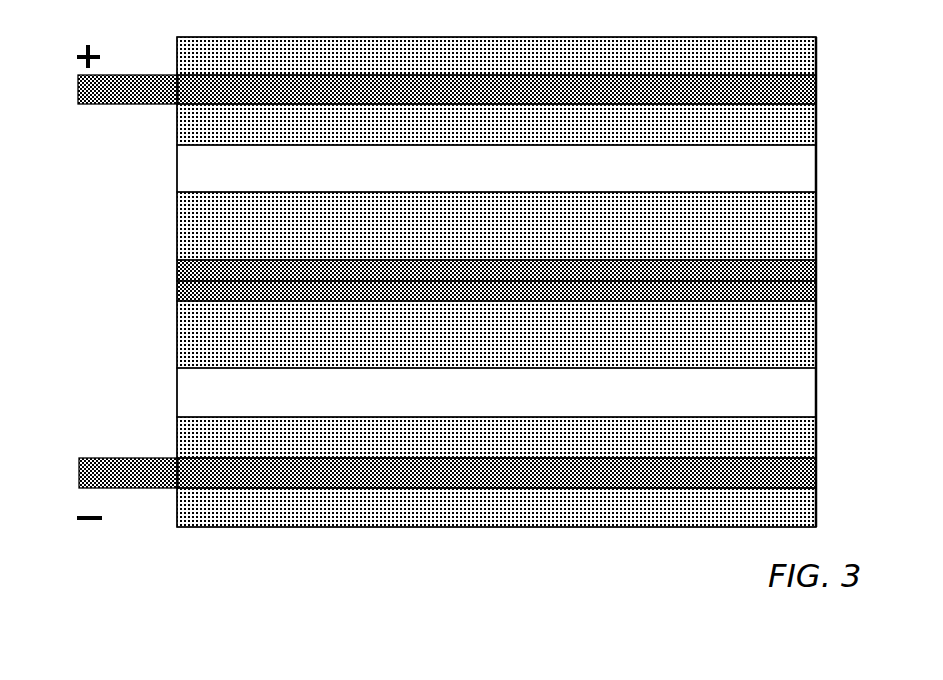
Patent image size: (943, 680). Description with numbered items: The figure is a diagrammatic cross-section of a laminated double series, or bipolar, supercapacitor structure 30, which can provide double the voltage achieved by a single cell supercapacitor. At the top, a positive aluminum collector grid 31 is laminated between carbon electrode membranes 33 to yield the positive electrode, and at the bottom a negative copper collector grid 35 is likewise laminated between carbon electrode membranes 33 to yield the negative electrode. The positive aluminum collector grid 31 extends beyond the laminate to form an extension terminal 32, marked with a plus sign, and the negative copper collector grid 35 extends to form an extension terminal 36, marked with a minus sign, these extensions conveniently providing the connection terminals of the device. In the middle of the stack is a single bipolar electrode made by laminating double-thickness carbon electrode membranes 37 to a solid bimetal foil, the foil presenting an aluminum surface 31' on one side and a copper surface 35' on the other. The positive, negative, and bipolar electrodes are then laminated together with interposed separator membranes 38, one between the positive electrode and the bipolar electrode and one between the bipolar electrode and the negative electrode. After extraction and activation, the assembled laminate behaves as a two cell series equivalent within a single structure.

The bipolar supercapacitor structure 30 is at (331, 550).
The positive aluminum collector grid 31 is at (524, 88).
The aluminum surface 31' is at (526, 290).
The extension terminal 32 is at (83, 93).
The carbon electrode membranes 33 is at (816, 57).
The negative copper collector grid 35 is at (524, 473).
The copper surface 35' is at (526, 266).
The extension terminal 36 is at (85, 477).
The double-thickness carbon electrode membranes 37 is at (810, 232).
The separator membranes 38 is at (810, 178).